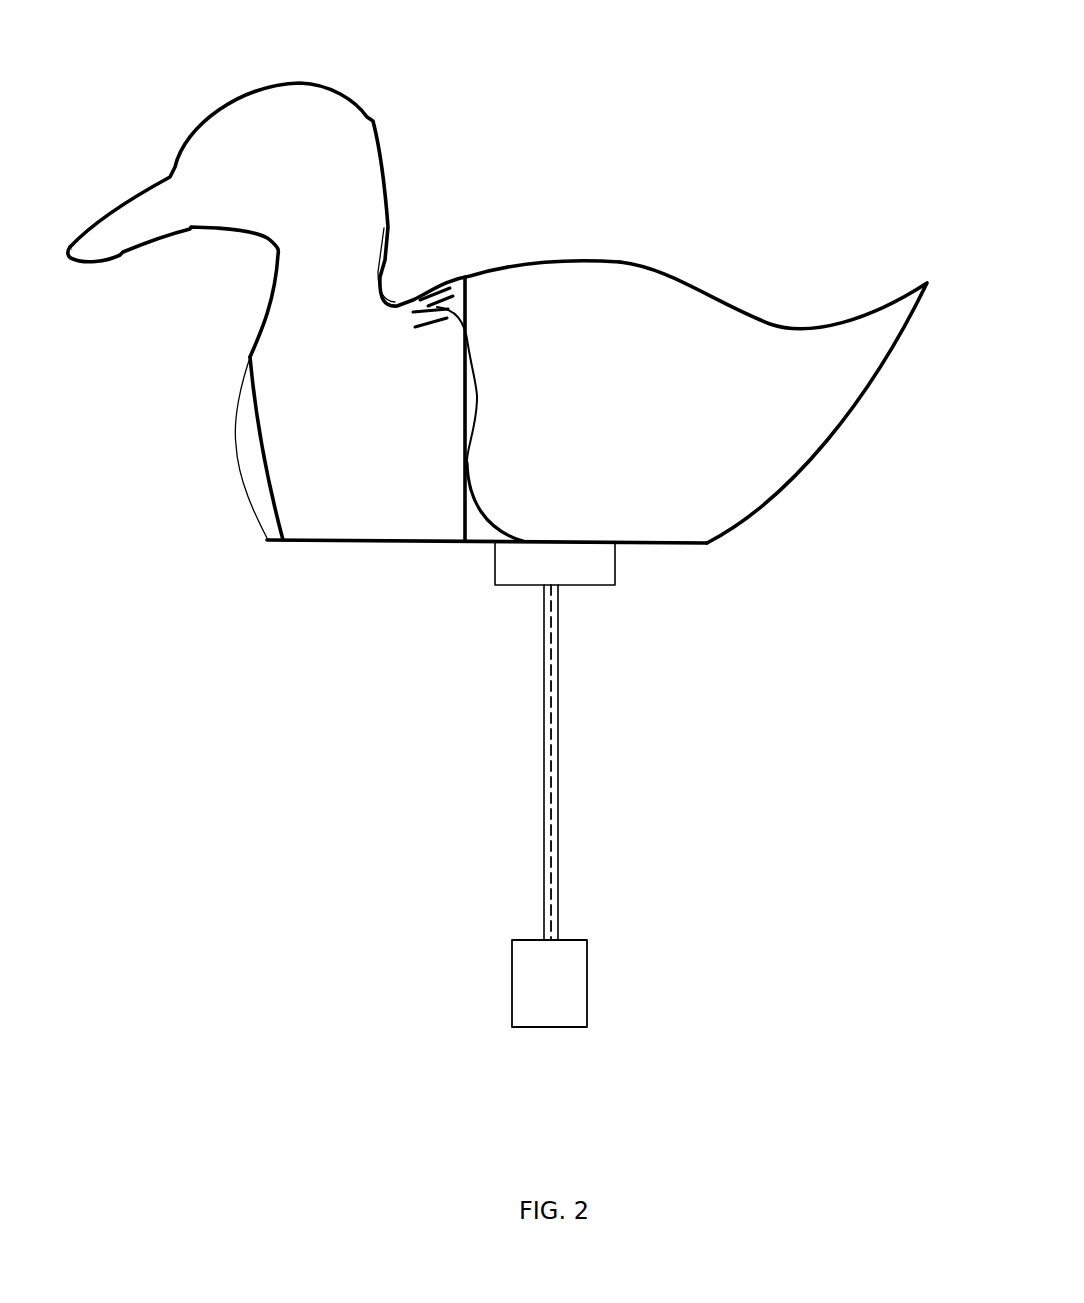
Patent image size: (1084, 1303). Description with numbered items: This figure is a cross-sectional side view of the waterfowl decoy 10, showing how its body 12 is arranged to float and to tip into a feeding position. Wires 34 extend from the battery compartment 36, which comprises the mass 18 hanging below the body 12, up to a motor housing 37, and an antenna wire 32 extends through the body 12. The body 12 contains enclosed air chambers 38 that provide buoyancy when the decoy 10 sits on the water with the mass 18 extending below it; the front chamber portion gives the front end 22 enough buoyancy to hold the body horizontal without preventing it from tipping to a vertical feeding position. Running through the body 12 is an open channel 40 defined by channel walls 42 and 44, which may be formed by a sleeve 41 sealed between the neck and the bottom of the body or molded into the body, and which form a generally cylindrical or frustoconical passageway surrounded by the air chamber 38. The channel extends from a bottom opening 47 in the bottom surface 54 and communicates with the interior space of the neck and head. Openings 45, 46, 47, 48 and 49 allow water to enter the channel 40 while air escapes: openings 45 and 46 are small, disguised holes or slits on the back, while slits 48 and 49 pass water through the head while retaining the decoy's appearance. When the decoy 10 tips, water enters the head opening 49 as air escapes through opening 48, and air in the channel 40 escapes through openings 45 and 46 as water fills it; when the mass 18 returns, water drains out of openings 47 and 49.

The decoy 10 is at (667, 213).
The body 12 is at (700, 283).
The mass 18 is at (588, 1008).
The front end 22 is at (233, 427).
The antenna wire 32 is at (473, 403).
The wires 34 is at (557, 777).
The battery compartment 36 is at (587, 953).
The motor housing 37 is at (617, 583).
The enclosed air chamber 38 is at (753, 337).
The open channel 40 is at (327, 517).
The sleeve 41 is at (277, 497).
The channel wall 42 is at (462, 410).
The channel wall 44 is at (267, 430).
The opening 45 is at (437, 283).
The opening 46 is at (445, 323).
The bottom opening 47 is at (380, 543).
The slit 48 is at (385, 167).
The opening 49 is at (157, 243).
The bottom surface 54 is at (488, 545).